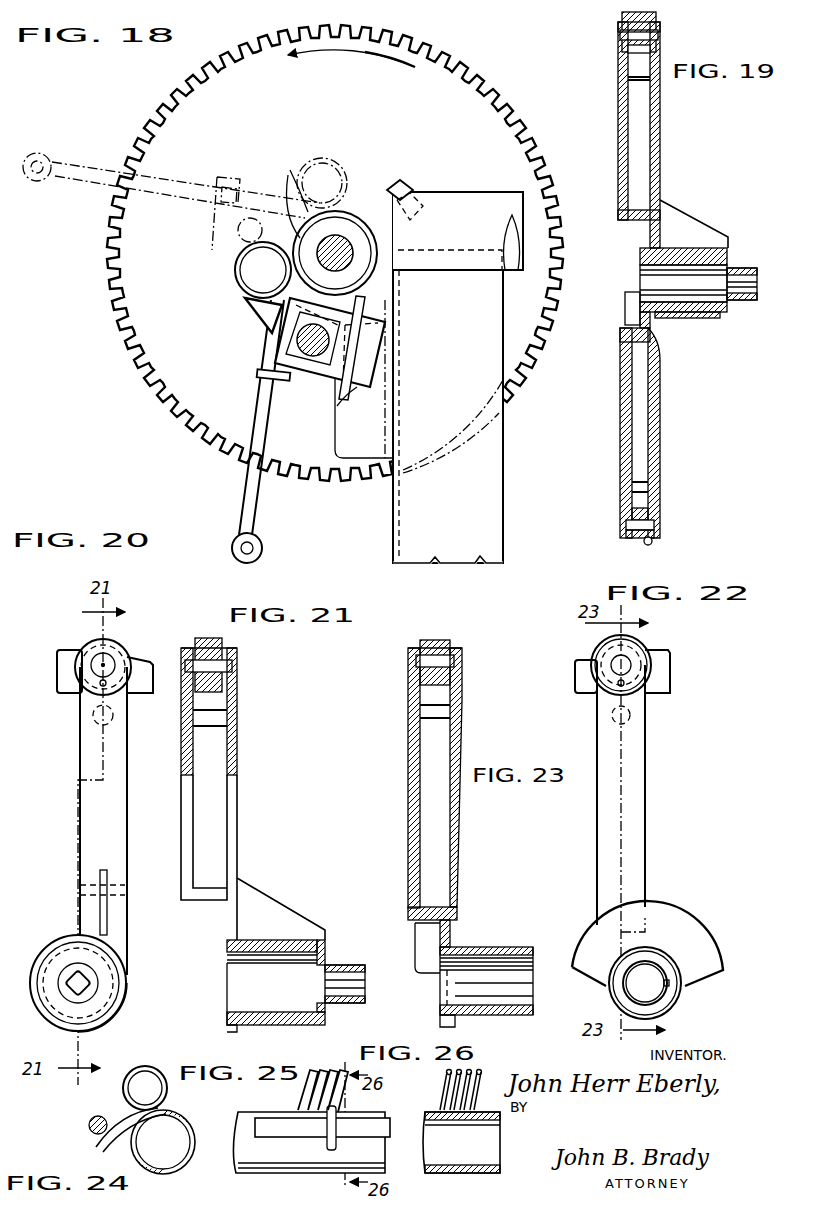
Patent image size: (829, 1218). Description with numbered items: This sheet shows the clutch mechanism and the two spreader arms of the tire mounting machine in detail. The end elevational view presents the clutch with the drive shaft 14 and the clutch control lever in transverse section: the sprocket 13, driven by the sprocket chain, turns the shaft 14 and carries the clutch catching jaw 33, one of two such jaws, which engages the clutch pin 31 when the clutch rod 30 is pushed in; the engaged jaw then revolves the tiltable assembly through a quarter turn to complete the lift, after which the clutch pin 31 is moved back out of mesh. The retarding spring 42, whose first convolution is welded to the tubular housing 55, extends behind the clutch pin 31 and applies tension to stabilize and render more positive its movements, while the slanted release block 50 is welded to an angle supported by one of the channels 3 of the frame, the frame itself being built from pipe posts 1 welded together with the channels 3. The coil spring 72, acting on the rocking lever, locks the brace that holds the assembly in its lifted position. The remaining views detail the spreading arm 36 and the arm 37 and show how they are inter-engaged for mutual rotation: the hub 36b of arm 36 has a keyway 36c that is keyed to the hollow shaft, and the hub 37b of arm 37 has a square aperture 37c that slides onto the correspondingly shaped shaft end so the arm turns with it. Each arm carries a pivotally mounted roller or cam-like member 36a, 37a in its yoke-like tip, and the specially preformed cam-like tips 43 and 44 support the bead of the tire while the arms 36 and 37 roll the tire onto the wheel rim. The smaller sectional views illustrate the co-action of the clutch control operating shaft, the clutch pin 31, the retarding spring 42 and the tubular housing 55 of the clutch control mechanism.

In FIG. 18, the pipe posts 1 is at (457, 172).
In FIG. 18, the channels 3 is at (412, 510).
In FIG. 18, the sprocket 13 is at (448, 95).
In FIG. 18, the shaft 14 is at (344, 245).
In FIG. 18, the clutch rod 30 is at (90, 166).
In FIG. 18, the clutch pin 31 is at (238, 231).
In FIG. 24, the clutch pin 31 is at (89, 1125).
In FIG. 25, the clutch pin 31 is at (276, 1125).
In FIG. 18, the clutch catching jaw 33 is at (258, 322).
In FIG. 19, the spreading arm 36 is at (662, 428).
In FIG. 23, the spreading arm 36 is at (416, 768).
In FIG. 22, the spreading arm 36 is at (632, 814).
In FIG. 19, the roller or cam-like member 36a is at (655, 544).
In FIG. 23, the roller or cam-like member 36a is at (430, 640).
In FIG. 22, the roller or cam-like member 36a is at (648, 646).
In FIG. 19, the hub 36b is at (680, 320).
In FIG. 23, the hub 36b is at (487, 947).
In FIG. 22, the hub 36b is at (662, 958).
In FIG. 19, the keyway 36c is at (652, 278).
In FIG. 23, the keyway 36c is at (525, 990).
In FIG. 22, the keyway 36c is at (672, 987).
In FIG. 19, the arm 37 is at (662, 155).
In FIG. 20, the arm 37 is at (100, 832).
In FIG. 21, the arm 37 is at (200, 838).
In FIG. 19, the roller or cam-like member 37a is at (632, 14).
In FIG. 20, the roller or cam-like member 37a is at (95, 640).
In FIG. 21, the roller or cam-like member 37a is at (222, 645).
In FIG. 19, the hub 37b is at (697, 246).
In FIG. 20, the hub 37b is at (42, 968).
In FIG. 21, the hub 37b is at (290, 940).
In FIG. 19, the square aperture 37c is at (732, 292).
In FIG. 20, the square aperture 37c is at (72, 1000).
In FIG. 21, the square aperture 37c is at (345, 985).
In FIG. 18, the retarding spring 42 is at (326, 160).
In FIG. 24, the retarding spring 42 is at (123, 1092).
In FIG. 22, the cam-like tip 43 is at (632, 706).
In FIG. 20, the cam-like tip 44 is at (140, 688).
In FIG. 18, the slanted release block 50 is at (346, 379).
In FIG. 18, the tubular housing 55 is at (286, 193).
In FIG. 24, the tubular housing 55 is at (186, 1118).
In FIG. 25, the tubular housing 55 is at (236, 1170).
In FIG. 26, the tubular housing 55 is at (492, 1152).
In FIG. 25, the coil spring 72 is at (300, 1090).
In FIG. 26, the coil spring 72 is at (478, 1126).